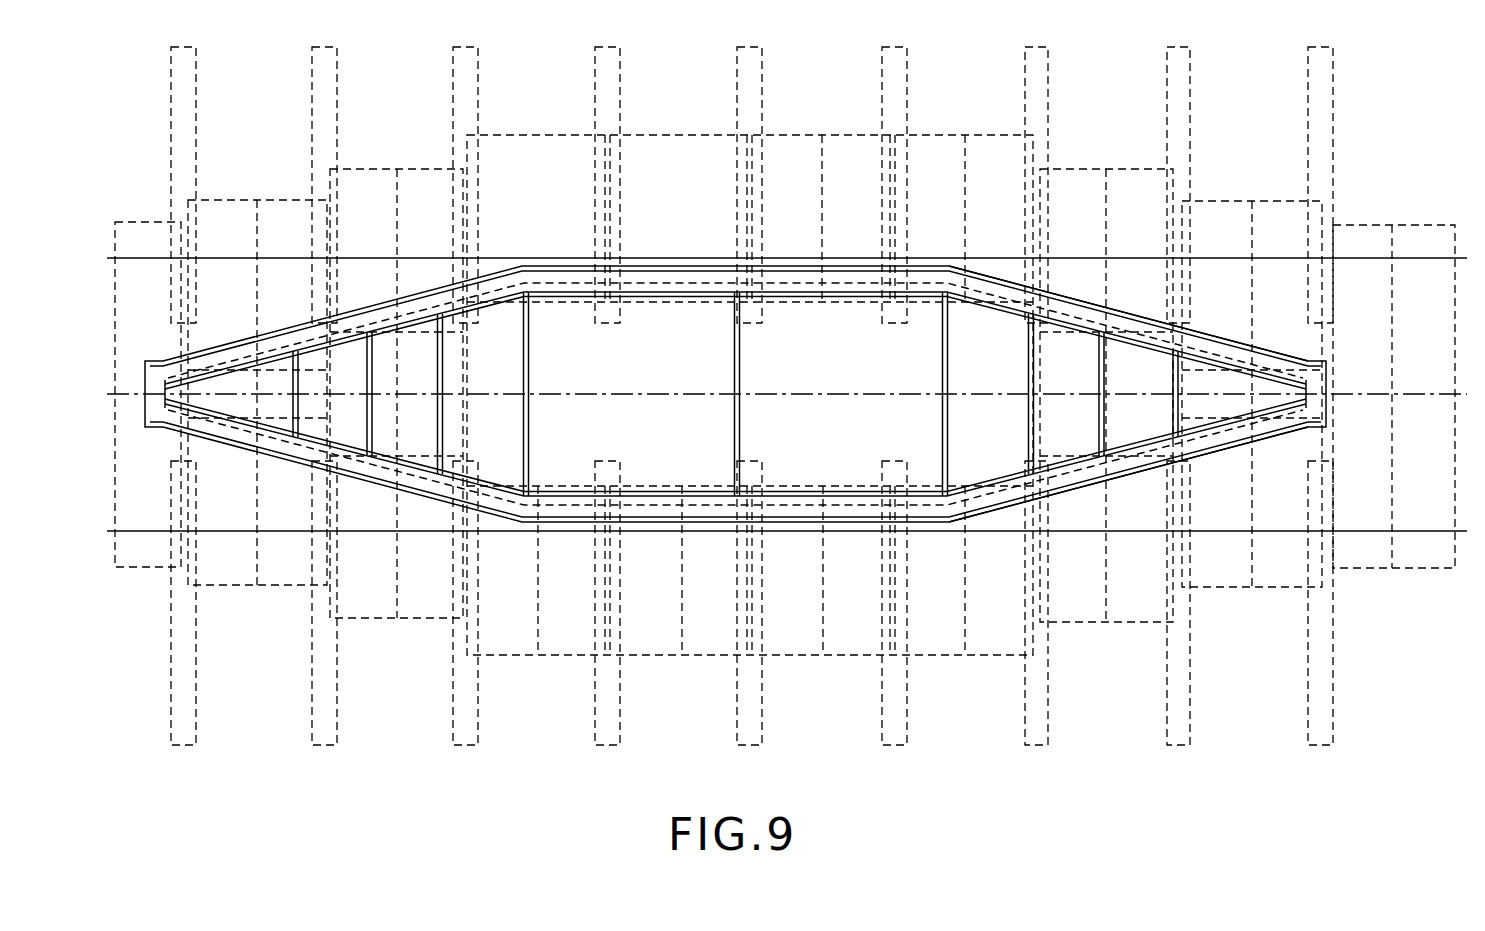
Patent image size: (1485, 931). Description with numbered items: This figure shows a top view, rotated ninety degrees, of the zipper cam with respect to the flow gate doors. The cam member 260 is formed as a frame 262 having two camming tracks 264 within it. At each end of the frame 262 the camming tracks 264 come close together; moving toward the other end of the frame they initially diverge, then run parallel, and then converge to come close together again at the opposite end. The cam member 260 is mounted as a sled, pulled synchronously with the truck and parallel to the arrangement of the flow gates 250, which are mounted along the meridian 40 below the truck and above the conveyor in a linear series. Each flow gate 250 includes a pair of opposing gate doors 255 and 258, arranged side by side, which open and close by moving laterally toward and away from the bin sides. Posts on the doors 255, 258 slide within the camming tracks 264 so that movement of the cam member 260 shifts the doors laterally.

The meridian 40 is at (1330, 404).
The flow gates 250 is at (802, 193).
The gate door 255 is at (935, 608).
The gate door 258 is at (927, 187).
The cam member 260 is at (996, 520).
The frame 262 is at (1062, 298).
The camming tracks 264 is at (1212, 347).